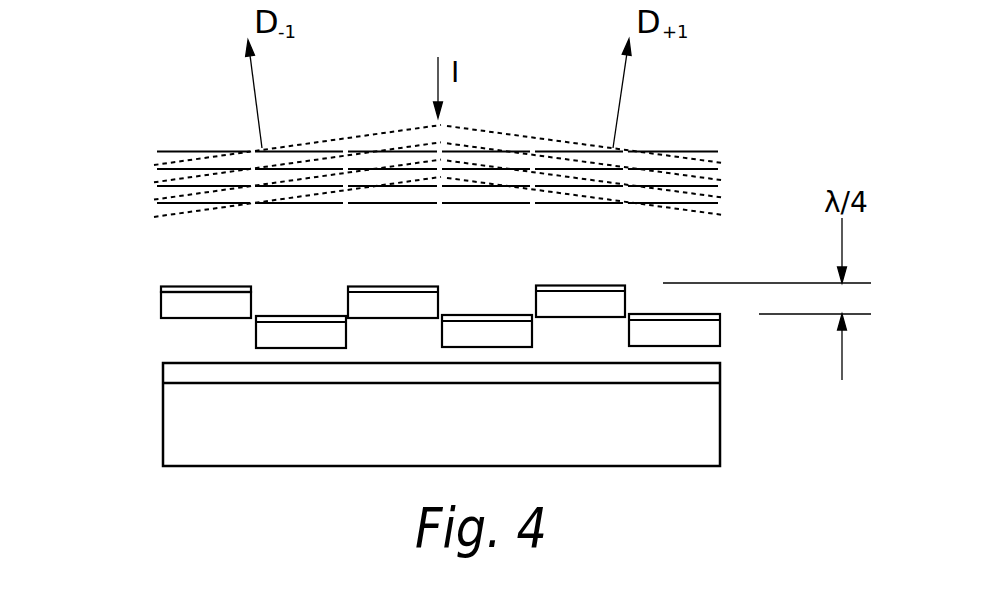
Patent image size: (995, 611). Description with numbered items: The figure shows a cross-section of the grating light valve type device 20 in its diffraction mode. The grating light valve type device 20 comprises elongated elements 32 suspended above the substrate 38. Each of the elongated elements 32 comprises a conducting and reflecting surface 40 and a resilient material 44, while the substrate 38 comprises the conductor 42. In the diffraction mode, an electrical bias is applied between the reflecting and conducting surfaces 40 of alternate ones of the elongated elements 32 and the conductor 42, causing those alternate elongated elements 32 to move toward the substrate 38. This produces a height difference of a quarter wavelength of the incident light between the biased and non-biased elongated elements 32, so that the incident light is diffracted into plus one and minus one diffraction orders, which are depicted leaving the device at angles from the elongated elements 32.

The grating light valve type device 20 is at (725, 122).
The elongated elements 32 is at (385, 284).
The substrate 38 is at (453, 437).
The conducting and reflecting surface 40 is at (170, 287).
The conductor 42 is at (720, 368).
The resilient material 44 is at (161, 305).